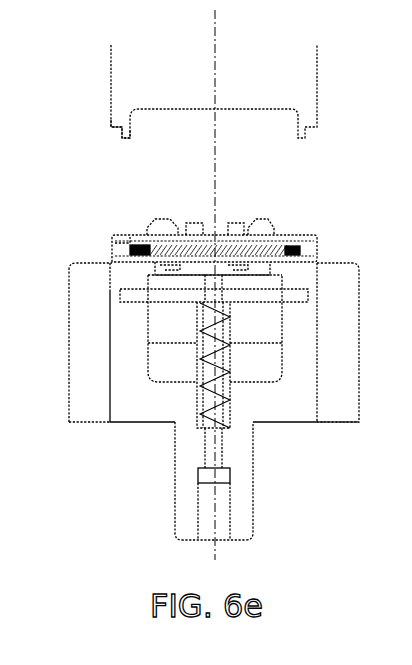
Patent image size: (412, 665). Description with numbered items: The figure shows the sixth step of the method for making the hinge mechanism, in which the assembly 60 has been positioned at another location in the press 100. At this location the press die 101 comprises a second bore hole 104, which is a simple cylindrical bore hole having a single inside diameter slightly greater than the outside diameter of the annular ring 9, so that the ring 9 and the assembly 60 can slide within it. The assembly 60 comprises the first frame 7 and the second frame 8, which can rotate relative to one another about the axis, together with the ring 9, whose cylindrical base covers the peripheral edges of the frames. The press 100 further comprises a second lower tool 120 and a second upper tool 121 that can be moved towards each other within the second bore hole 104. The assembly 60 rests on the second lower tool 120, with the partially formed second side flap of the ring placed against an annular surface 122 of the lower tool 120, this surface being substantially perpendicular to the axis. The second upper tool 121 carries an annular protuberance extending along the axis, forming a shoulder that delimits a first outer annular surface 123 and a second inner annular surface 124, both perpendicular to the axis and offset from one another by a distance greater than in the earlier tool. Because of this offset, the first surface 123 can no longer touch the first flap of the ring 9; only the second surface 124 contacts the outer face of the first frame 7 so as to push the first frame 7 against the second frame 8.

The press 100 is at (347, 135).
The second upper tool 121 is at (297, 87).
The first outer annular surface 123 is at (115, 125).
The second inner annular surface 124 is at (128, 141).
The assembly 60 is at (247, 225).
The first frame 7 is at (291, 245).
The annular ring 9 is at (318, 240).
The second frame 8 is at (303, 261).
The press die 101 is at (83, 381).
The annular surface 122 is at (110, 291).
The second lower tool 120 is at (283, 405).
The second bore hole 104 is at (140, 430).